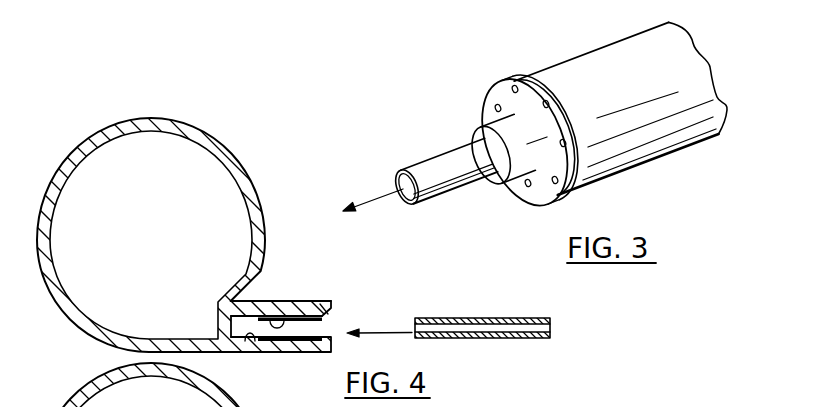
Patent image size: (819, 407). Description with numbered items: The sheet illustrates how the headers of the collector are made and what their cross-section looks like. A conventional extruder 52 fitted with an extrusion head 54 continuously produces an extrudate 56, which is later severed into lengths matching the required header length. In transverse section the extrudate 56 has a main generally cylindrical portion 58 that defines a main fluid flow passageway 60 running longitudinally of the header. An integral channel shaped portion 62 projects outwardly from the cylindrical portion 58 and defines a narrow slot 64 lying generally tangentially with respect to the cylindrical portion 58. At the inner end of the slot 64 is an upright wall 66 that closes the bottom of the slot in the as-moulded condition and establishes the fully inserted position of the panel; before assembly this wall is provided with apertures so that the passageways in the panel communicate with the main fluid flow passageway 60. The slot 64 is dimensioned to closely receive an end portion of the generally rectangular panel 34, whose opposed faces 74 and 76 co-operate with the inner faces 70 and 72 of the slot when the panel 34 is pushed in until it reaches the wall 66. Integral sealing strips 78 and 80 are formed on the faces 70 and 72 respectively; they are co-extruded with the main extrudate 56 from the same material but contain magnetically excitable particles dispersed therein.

In FIG. 4, the panel 34 is at (482, 303).
In FIG. 3, the extruder 52 is at (591, 64).
In FIG. 3, the extrusion head 54 is at (497, 128).
In FIG. 3, the extrudate 56 is at (424, 149).
In FIG. 4, the extrudate 56 is at (238, 142).
In FIG. 4, the main generally cylindrical portion 58 is at (67, 304).
In FIG. 4, the main fluid flow passageway 60 is at (151, 235).
In FIG. 4, the channel shaped portion 62 is at (319, 287).
In FIG. 4, the narrow slot 64 is at (328, 330).
In FIG. 4, the upright wall 66 is at (220, 328).
In FIG. 4, the inner face 70 is at (270, 322).
In FIG. 4, the inner face 72 is at (243, 341).
In FIG. 4, the opposed face 74 is at (445, 322).
In FIG. 4, the opposed face 76 is at (443, 338).
In FIG. 4, the sealing strip 78 is at (330, 312).
In FIG. 4, the sealing strip 80 is at (293, 343).